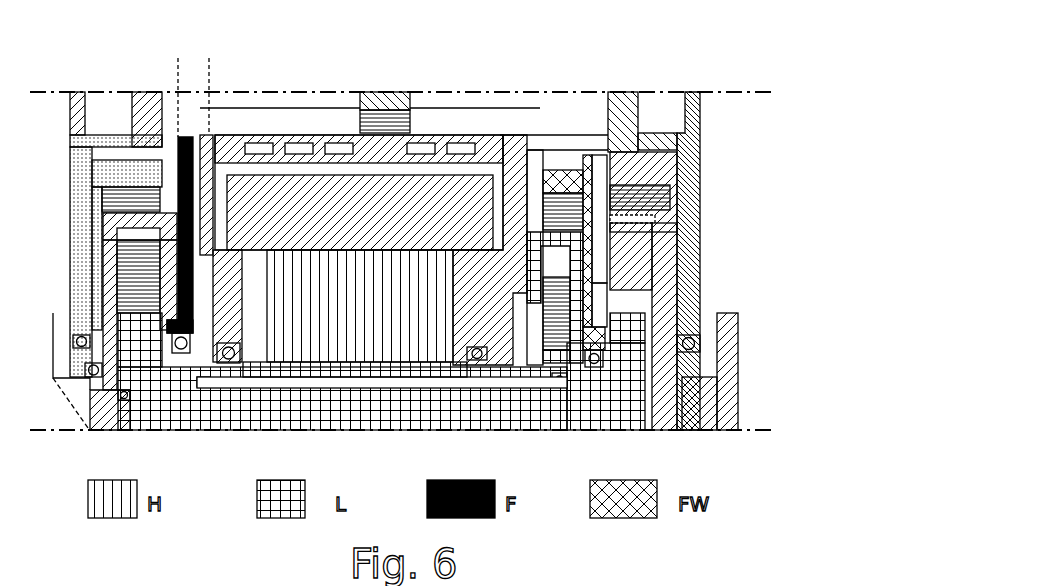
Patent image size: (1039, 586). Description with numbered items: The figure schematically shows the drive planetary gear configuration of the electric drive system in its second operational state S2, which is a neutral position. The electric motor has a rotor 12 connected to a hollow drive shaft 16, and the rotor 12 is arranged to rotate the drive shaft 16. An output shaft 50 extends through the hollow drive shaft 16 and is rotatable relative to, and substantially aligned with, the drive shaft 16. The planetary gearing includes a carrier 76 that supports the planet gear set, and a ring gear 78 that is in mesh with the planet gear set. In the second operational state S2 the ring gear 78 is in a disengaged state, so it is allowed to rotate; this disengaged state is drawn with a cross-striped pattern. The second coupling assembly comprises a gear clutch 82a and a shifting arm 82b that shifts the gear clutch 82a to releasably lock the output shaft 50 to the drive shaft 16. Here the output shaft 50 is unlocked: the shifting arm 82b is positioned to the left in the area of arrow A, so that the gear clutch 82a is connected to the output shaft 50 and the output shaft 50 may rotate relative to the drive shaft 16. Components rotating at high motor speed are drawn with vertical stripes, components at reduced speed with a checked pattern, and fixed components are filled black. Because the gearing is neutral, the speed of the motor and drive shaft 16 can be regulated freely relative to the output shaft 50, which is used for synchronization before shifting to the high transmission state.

The shifting arm 82b is at (191, 137).
The gear clutch 82a is at (186, 360).
The carrier 76 is at (533, 232).
The ring gear 78 is at (572, 170).
The drive shaft 16 is at (440, 372).
The rotor 12 is at (363, 340).
The output shaft 50 is at (297, 425).
The second operational state S2 is at (657, 50).
The arrow A is at (207, 77).